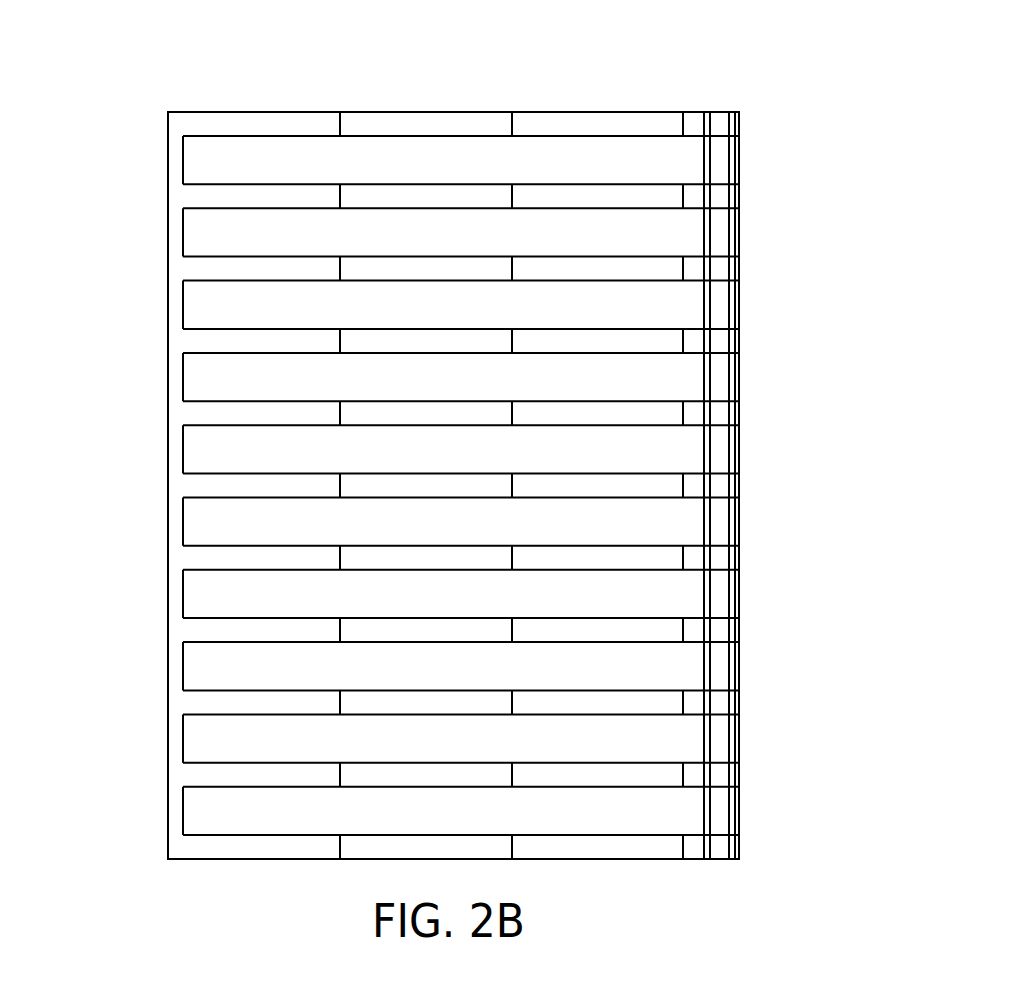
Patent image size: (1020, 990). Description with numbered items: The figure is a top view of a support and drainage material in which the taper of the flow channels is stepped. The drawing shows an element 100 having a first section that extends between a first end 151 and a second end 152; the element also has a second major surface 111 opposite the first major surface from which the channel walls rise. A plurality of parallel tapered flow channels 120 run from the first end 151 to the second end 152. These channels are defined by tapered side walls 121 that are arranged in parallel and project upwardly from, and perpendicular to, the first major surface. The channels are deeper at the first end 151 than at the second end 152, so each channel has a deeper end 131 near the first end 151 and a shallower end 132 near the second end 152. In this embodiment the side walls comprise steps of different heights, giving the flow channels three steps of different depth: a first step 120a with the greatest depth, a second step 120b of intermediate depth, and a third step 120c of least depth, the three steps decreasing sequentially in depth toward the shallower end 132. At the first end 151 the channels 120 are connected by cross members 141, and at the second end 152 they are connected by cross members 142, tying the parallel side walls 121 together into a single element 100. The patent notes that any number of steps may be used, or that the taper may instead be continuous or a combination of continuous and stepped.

The element 100 is at (739, 446).
The second major surface 111 is at (238, 847).
The tapered flow channels 120 is at (200, 808).
The first flow channel step 120a is at (596, 160).
The second flow channel step 120b is at (436, 160).
The third flow channel step 120c is at (253, 160).
The tapered side walls 121 is at (672, 845).
The deeper end 131 is at (652, 600).
The shallower end 132 is at (200, 160).
The cross members 141 is at (739, 521).
The cross members 142 is at (180, 450).
The first end 151 is at (772, 302).
The second end 152 is at (133, 325).